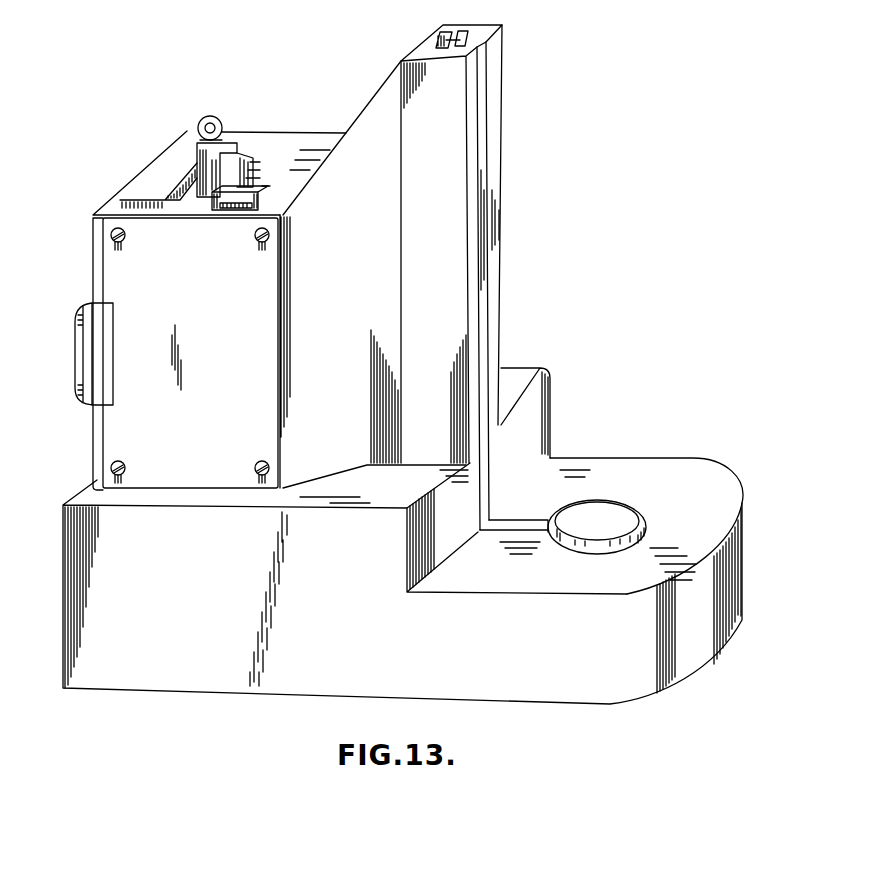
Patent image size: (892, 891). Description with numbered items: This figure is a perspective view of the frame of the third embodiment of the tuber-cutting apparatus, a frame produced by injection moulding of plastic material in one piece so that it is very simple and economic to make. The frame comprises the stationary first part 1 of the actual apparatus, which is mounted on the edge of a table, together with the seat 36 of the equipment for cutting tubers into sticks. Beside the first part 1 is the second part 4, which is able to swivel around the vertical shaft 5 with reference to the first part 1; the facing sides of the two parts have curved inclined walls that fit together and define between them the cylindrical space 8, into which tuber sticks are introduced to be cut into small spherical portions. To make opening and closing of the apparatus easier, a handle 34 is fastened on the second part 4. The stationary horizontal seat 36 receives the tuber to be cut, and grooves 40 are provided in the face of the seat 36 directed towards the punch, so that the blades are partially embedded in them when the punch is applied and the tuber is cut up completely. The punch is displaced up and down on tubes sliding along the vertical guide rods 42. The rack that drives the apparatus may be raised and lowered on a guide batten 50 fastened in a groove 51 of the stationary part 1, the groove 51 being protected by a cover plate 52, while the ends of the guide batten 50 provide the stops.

The first part 1 is at (322, 142).
The second part 4 is at (153, 170).
The vertical shaft 5 is at (214, 117).
The cylindrical space 8 is at (214, 163).
The handle 34 is at (80, 361).
The seat 36 is at (403, 536).
The grooves 40 is at (611, 509).
The vertical guide rods 42 is at (499, 58).
The guide batten 50 is at (256, 178).
The groove 51 is at (221, 210).
The cover plate 52 is at (260, 401).